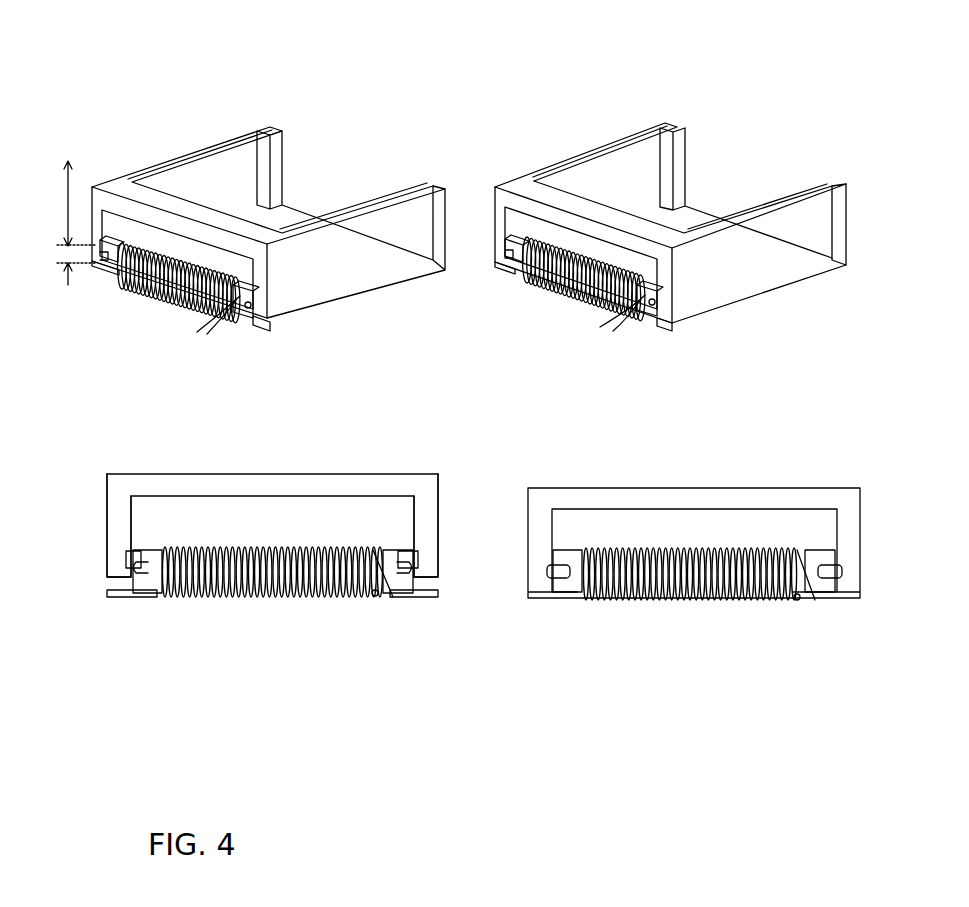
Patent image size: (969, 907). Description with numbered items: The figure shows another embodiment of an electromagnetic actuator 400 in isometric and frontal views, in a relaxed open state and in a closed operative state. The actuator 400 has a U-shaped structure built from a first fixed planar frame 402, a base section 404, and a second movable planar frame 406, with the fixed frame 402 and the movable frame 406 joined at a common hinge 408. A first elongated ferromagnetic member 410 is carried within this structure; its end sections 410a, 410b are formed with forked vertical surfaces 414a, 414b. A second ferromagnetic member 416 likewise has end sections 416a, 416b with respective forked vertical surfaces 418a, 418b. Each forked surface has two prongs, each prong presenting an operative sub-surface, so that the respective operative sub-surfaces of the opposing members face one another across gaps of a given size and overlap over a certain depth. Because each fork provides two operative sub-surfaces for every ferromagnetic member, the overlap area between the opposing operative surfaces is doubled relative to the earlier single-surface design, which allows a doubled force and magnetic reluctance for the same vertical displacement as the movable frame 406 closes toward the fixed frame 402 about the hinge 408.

The EM actuator 400 is at (494, 40).
The first fixed planar frame 402 is at (763, 297).
The base section 404 is at (842, 252).
The second movable planar frame 406 is at (793, 200).
The common hinge 408 is at (842, 183).
The first elongated ferromagnetic member 410 is at (157, 284).
The end section 410a is at (568, 585).
The end section 410b is at (823, 590).
The forked vertical surface 414a is at (130, 583).
The forked vertical surface 414b is at (413, 583).
The second ferromagnetic member 416 is at (520, 185).
The end section 416a is at (120, 507).
The end section 416b is at (427, 507).
The forked vertical surface 418a is at (128, 557).
The forked vertical surface 418b is at (418, 557).